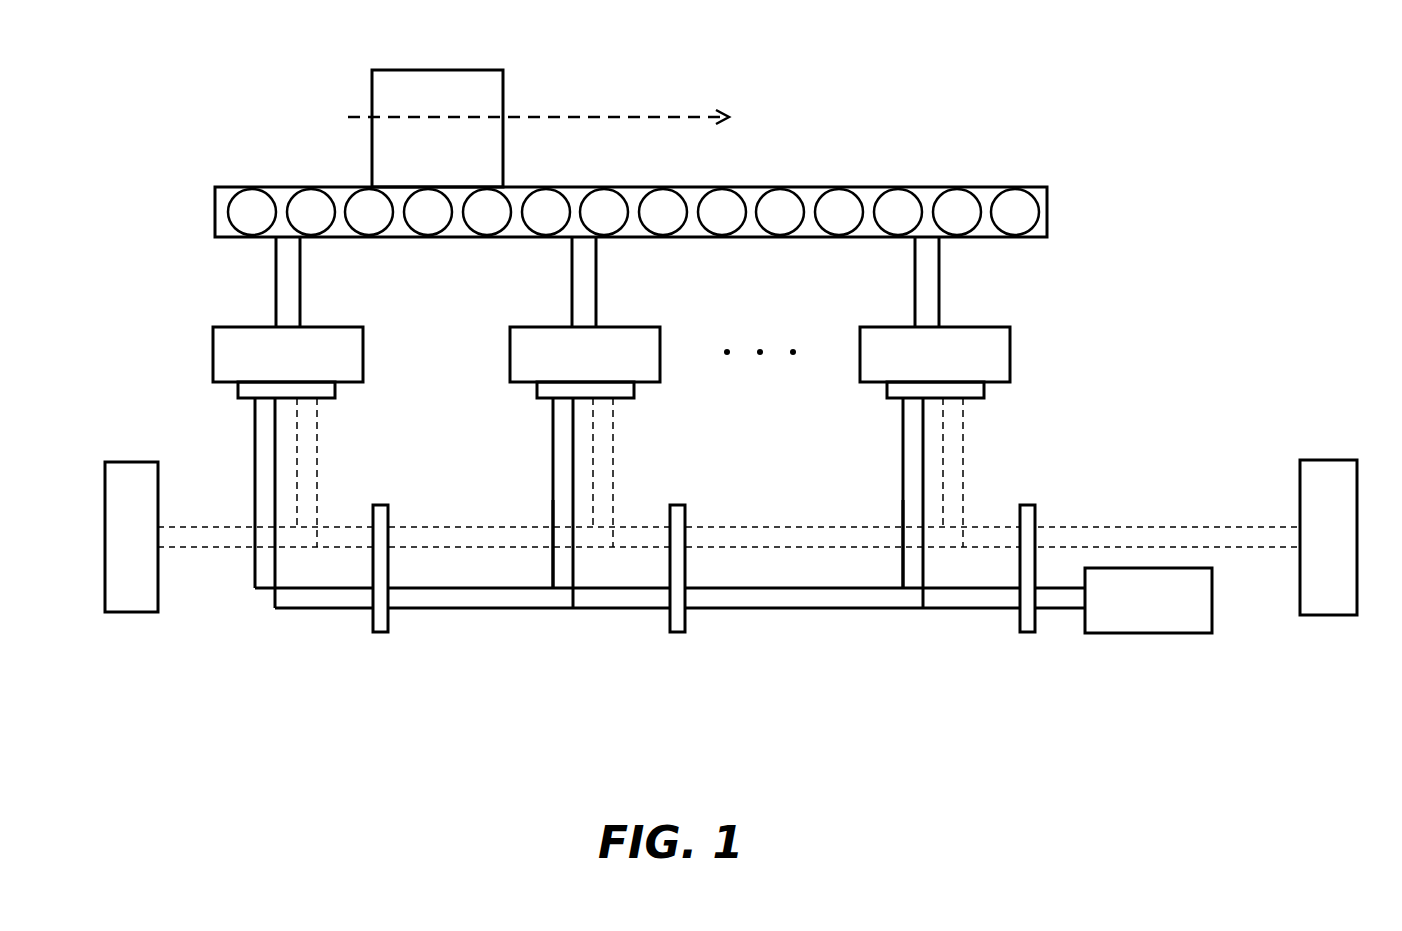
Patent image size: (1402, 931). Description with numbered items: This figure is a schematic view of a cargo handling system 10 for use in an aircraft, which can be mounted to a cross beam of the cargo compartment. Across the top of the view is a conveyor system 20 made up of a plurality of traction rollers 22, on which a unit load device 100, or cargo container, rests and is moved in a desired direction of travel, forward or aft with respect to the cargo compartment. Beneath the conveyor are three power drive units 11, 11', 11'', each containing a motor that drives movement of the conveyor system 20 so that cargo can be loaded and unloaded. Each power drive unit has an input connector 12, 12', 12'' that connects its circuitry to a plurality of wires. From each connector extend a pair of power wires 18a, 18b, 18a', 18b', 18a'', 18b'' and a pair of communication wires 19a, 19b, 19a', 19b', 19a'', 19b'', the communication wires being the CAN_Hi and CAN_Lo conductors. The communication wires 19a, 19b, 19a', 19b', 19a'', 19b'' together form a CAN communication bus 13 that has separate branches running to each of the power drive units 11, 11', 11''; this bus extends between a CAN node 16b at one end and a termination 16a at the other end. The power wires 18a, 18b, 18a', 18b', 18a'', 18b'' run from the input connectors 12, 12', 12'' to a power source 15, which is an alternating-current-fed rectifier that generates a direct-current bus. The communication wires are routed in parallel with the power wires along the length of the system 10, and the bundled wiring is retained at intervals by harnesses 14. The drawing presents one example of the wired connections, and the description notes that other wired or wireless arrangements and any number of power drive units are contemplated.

The cargo handling system 10 is at (185, 276).
The unit load device 100 is at (460, 69).
The conveyor system 20 is at (1049, 190).
The traction rollers 22 is at (252, 200).
The power drive unit 11 is at (288, 312).
The power drive unit 11' is at (585, 312).
The power drive unit 11'' is at (935, 312).
The input connector 12 is at (242, 397).
The input connector 12' is at (635, 397).
The input connector 12'' is at (989, 397).
The power wire 18a is at (212, 503).
The power wire 18a' is at (506, 503).
The power wire 18a'' is at (855, 503).
The power wire 18b is at (629, 584).
The power wire 18b' is at (516, 526).
The power wire 18b'' is at (863, 526).
The communication wire 19a is at (353, 462).
The communication wire 19a' is at (653, 462).
The communication wire 19a'' is at (1007, 462).
The communication wire 19b is at (373, 472).
The communication wire 19b' is at (674, 472).
The communication wire 19b'' is at (1028, 472).
The CAN communication bus 13 is at (1213, 525).
The harnesses 14 is at (383, 635).
The power source 15 is at (1175, 636).
The termination 16a is at (133, 614).
The CAN node 16b is at (1330, 617).